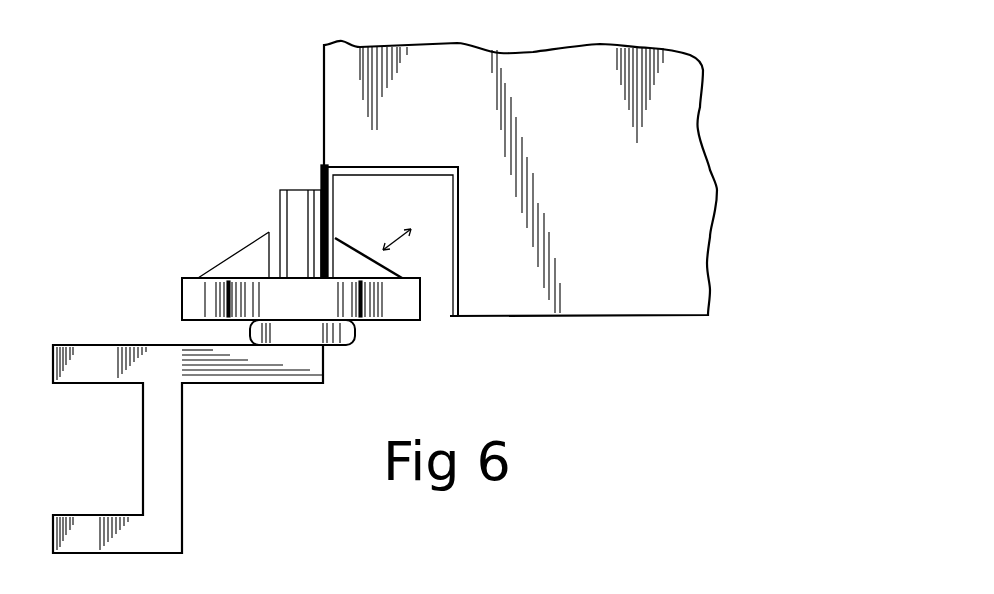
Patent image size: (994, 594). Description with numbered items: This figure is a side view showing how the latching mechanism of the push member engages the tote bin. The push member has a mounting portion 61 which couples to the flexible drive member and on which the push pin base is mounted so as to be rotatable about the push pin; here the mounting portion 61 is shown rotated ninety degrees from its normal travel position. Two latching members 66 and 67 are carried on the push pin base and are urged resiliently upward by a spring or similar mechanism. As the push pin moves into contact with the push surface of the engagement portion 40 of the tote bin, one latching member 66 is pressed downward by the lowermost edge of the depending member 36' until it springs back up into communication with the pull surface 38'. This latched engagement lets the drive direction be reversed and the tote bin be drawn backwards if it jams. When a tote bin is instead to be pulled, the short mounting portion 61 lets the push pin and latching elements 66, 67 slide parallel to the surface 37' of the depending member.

The engagement portion 40 is at (453, 301).
The pull surface 38' is at (393, 245).
The surface 37' is at (309, 218).
The depending member 36' is at (373, 232).
The latching member 66 is at (398, 274).
The latching member 67 is at (234, 260).
The mounting portion 61 is at (98, 355).